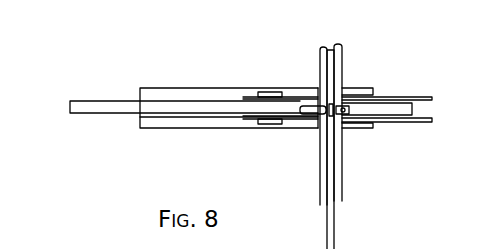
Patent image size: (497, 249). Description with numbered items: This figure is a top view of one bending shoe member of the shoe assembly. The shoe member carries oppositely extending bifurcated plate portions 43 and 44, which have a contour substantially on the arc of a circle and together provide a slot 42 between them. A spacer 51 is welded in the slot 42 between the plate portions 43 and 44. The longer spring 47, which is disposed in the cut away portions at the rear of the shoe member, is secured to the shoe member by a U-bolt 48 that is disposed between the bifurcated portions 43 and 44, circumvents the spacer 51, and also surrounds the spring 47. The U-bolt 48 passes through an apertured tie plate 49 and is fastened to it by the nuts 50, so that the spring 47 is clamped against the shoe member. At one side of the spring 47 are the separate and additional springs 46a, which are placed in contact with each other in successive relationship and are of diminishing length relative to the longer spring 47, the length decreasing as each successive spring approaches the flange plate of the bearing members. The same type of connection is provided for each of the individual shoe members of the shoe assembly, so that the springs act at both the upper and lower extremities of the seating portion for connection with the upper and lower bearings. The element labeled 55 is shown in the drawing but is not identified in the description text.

The slot 42 is at (167, 110).
The bifurcated plate portion 43 is at (228, 97).
The bifurcated plate portion 44 is at (302, 128).
The separate and additional springs 46a is at (337, 200).
The longer spring 47 is at (326, 212).
The U-bolt 48 is at (321, 106).
The apertured tie plate 49 is at (333, 104).
The nuts 50 is at (346, 110).
The spacer 51 is at (317, 130).
The slide bar 55 is at (75, 114).